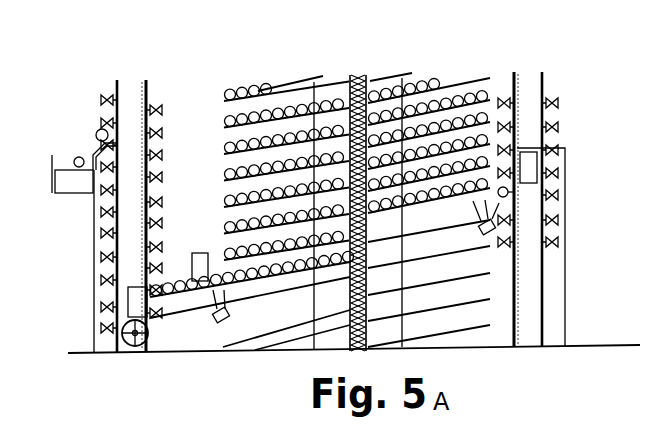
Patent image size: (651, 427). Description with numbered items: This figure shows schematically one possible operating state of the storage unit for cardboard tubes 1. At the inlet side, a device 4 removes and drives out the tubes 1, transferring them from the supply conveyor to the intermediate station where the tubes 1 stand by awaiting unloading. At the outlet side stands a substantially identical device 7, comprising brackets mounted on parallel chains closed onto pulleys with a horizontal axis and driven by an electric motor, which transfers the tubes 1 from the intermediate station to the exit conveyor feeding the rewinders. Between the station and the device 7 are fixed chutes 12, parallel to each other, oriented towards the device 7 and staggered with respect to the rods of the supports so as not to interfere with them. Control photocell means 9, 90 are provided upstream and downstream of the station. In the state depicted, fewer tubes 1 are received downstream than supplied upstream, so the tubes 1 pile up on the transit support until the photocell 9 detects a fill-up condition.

The tubes 1 is at (443, 86).
The device 4 is at (575, 94).
The device 7 is at (162, 79).
The photocell 9 is at (480, 230).
The fixed chutes 12 is at (190, 305).
The photocell 90 is at (247, 307).